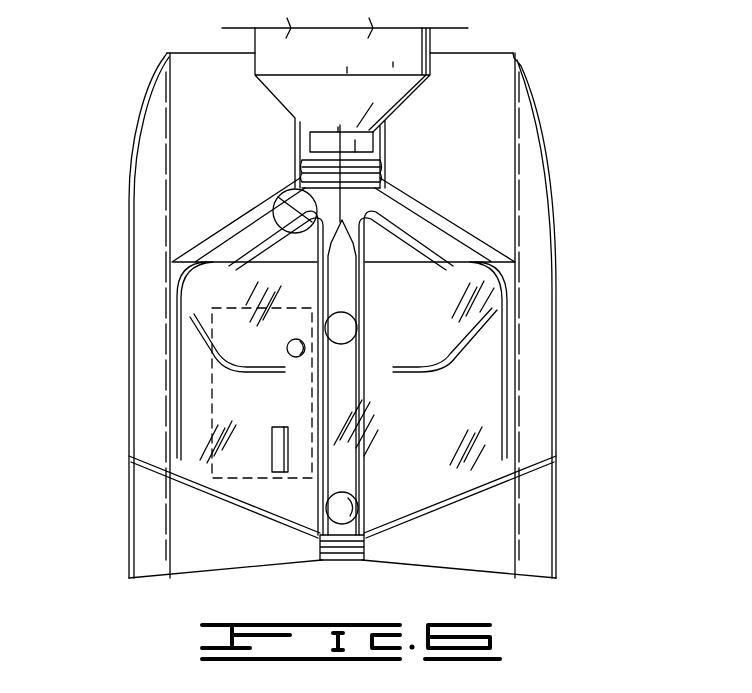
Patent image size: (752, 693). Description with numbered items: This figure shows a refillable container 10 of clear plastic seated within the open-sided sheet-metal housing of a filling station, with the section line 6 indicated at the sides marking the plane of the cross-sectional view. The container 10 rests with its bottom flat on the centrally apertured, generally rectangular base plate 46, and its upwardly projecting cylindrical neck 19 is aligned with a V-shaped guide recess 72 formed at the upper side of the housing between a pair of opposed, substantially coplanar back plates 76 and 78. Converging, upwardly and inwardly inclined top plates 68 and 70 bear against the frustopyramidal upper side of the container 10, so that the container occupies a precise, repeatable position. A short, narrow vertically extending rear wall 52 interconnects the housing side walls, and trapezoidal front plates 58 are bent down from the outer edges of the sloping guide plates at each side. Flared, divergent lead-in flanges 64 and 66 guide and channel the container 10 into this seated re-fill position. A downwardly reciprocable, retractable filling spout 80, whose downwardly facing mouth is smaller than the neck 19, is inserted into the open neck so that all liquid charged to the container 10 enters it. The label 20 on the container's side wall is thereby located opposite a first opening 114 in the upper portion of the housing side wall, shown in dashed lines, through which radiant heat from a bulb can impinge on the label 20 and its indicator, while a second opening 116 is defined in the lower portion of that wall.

The container 10 is at (423, 208).
The neck 19 is at (302, 162).
The label 20 is at (202, 367).
The base plate 46 is at (335, 562).
The rear wall 52 is at (352, 398).
The front plate 58 is at (202, 543).
The lead-in flange 64 is at (150, 167).
The lead-in flange 66 is at (538, 182).
The top plate 68 is at (228, 234).
The top plate 70 is at (475, 242).
The V-shaped guide recess 72 is at (305, 140).
The back plate 76 is at (236, 190).
The back plate 78 is at (480, 126).
The filling spout 80 is at (437, 39).
The first opening 114 is at (286, 352).
The second opening 116 is at (278, 472).
The section line 6 is at (84, 383).